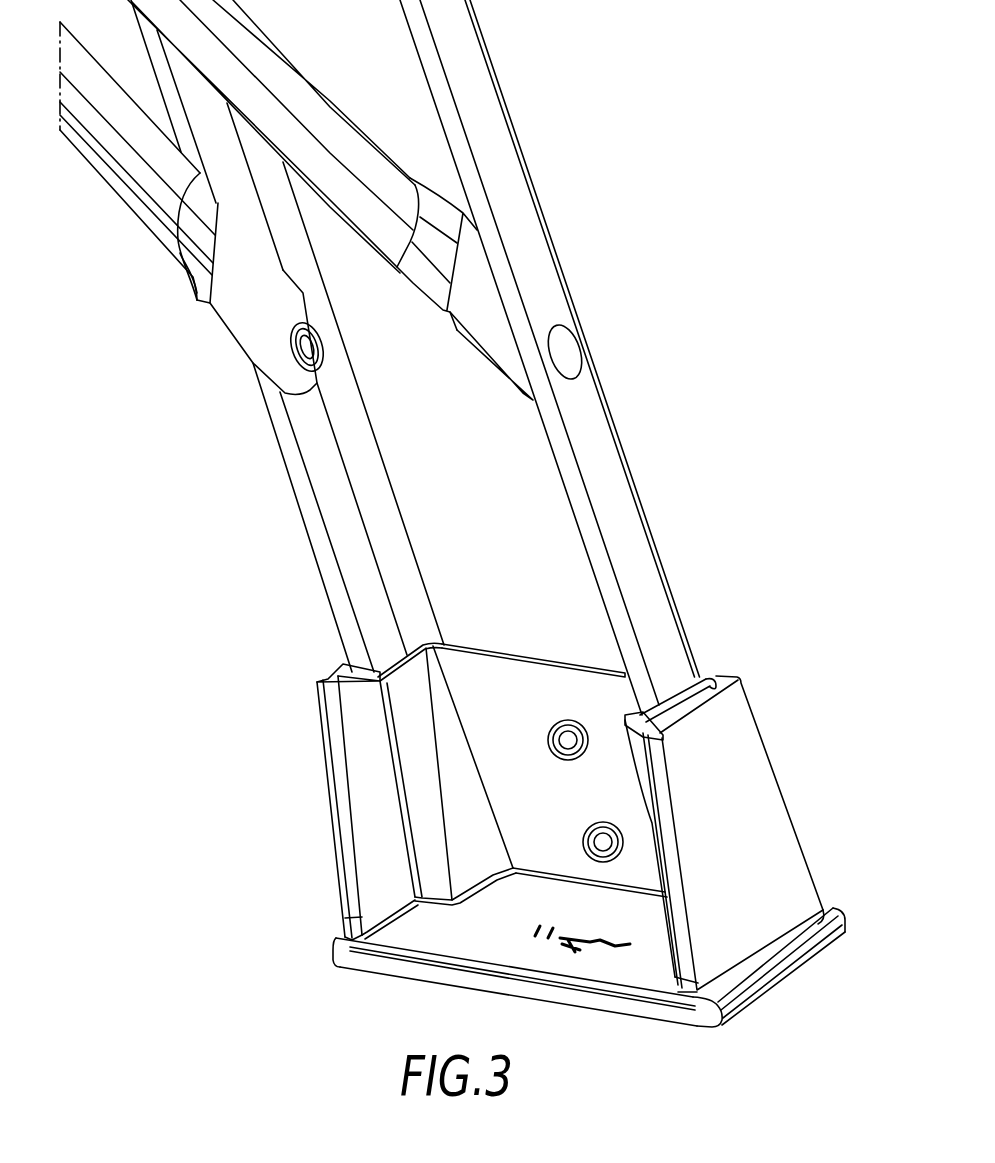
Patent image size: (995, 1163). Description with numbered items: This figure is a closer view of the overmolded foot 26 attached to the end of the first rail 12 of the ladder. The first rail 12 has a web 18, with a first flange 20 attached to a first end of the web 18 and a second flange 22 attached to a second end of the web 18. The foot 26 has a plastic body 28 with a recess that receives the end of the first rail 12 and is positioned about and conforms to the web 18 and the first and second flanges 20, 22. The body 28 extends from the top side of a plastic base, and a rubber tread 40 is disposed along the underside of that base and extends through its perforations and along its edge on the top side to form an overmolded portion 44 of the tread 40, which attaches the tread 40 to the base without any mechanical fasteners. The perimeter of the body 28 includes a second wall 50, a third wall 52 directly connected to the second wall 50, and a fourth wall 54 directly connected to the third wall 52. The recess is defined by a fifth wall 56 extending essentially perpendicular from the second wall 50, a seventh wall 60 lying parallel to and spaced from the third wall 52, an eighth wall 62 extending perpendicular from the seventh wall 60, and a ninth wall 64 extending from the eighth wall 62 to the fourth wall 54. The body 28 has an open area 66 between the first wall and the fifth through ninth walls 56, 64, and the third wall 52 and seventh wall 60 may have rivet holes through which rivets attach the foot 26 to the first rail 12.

The first rail 12 is at (560, 74).
The web 18 is at (428, 474).
The first flange 20 is at (588, 418).
The second flange 22 is at (305, 423).
The foot 26 is at (782, 586).
The plastic body 28 is at (816, 849).
The rubber tread 40 is at (753, 1002).
The overmolded portion 44 is at (800, 930).
The second wall 50 is at (753, 778).
The third wall 52 is at (708, 682).
The fourth wall 54 is at (325, 672).
The fifth wall 56 is at (661, 740).
The seventh wall 60 is at (529, 718).
The eighth wall 62 is at (442, 757).
The ninth wall 64 is at (370, 735).
The open area 66 is at (545, 916).